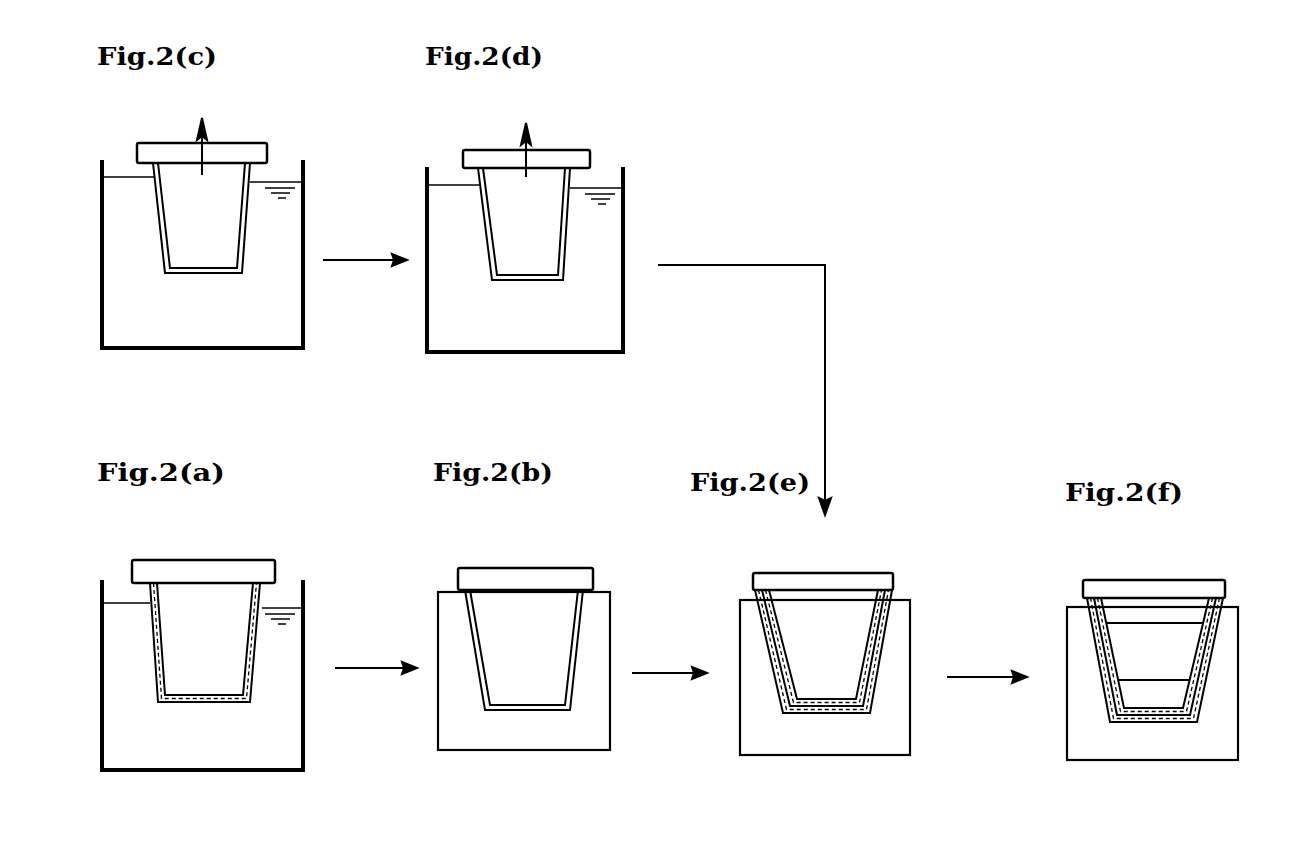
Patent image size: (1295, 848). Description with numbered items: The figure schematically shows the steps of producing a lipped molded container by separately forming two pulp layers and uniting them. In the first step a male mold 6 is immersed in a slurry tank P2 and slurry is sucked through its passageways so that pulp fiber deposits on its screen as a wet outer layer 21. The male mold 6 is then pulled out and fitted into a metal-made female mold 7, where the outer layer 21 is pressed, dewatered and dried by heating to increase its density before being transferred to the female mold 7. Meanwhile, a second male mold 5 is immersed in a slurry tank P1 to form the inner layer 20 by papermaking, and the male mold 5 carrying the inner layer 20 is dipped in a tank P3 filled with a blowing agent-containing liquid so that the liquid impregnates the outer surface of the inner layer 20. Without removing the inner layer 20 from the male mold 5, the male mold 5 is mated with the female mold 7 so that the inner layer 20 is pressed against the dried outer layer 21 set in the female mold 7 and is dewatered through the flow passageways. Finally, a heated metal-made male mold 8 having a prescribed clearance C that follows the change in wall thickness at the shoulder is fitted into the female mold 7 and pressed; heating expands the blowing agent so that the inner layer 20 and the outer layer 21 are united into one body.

In FIG. 2C, the male mold 5 is at (247, 150).
In FIG. 2D, the male mold 5 is at (573, 155).
In FIG. 2E, the male mold 5 is at (878, 583).
In FIG. 2A, the male mold 6 is at (242, 578).
In FIG. 2B, the male mold 6 is at (570, 578).
In FIG. 2B, the female mold 7 is at (580, 733).
In FIG. 2E, the female mold 7 is at (857, 738).
In FIG. 2F, the female mold 7 is at (1208, 748).
In FIG. 2F, the male mold 8 is at (1210, 588).
In FIG. 2C, the inner layer 20 is at (197, 273).
In FIG. 2D, the inner layer 20 is at (523, 282).
In FIG. 2E, the inner layer 20 is at (808, 713).
In FIG. 2F, the inner layer 20 is at (1132, 722).
In FIG. 2A, the outer layer 21 is at (197, 703).
In FIG. 2B, the outer layer 21 is at (483, 712).
In FIG. 2E, the outer layer 21 is at (783, 715).
In FIG. 2F, the outer layer 21 is at (1112, 723).
In FIG. 2F, the clearance C is at (1183, 692).
In FIG. 2C, the slurry tank P1 is at (202, 350).
In FIG. 2A, the slurry tank P2 is at (200, 772).
In FIG. 2D, the tank P3 is at (520, 355).